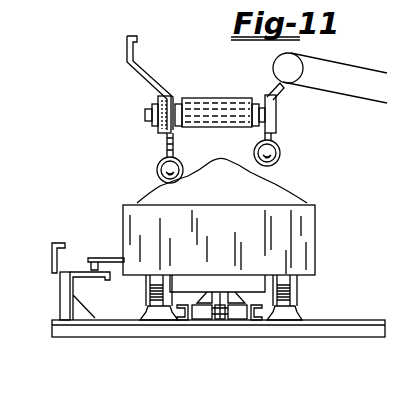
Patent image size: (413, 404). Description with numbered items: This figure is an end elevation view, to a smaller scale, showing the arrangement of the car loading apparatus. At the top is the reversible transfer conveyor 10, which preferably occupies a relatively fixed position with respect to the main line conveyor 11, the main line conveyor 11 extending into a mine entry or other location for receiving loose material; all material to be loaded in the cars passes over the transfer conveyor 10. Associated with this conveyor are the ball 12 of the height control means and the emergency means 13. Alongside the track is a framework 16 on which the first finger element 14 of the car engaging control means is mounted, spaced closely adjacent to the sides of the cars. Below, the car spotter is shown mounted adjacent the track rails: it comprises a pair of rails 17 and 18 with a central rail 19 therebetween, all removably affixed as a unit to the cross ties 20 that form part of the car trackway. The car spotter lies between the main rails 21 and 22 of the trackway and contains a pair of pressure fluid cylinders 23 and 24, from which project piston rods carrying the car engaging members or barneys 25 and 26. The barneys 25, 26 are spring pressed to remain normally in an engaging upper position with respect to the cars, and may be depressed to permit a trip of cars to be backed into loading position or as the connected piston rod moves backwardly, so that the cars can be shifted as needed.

The reversible transfer conveyor 10 is at (186, 77).
The main line conveyor 11 is at (360, 97).
The ball 12 is at (157, 170).
The emergency means 13 is at (281, 158).
The first finger element 14 is at (108, 257).
The framework 16 is at (60, 291).
The rail 17 is at (182, 320).
The rail 18 is at (257, 322).
The central rail 19 is at (222, 318).
The cross ties 20 is at (78, 333).
The main rail 21 is at (145, 311).
The main rail 22 is at (290, 320).
The pressure fluid cylinder 23 is at (202, 318).
The pressure fluid cylinder 24 is at (238, 318).
The car engaging member or barney 25 is at (210, 300).
The car engaging member or barney 26 is at (236, 296).